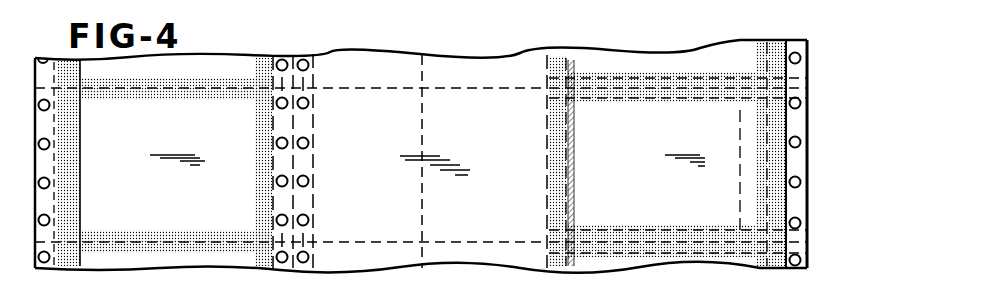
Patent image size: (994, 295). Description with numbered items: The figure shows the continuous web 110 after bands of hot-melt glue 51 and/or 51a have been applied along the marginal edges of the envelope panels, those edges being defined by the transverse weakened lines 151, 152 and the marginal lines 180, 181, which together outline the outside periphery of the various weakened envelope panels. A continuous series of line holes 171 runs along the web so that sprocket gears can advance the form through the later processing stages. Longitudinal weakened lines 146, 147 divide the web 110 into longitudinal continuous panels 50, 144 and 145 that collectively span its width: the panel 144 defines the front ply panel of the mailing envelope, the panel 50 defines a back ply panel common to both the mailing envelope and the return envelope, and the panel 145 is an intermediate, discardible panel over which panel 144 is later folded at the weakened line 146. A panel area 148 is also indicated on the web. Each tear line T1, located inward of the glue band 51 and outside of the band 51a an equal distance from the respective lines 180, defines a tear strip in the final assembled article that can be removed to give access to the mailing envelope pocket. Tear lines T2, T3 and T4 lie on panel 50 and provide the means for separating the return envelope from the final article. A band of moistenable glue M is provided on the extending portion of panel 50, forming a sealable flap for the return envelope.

The web 110 is at (451, 52).
The front ply panel 144 is at (200, 76).
The intermediate discardible panel 145 is at (397, 70).
The longitudinal weakened line 146 is at (290, 158).
The longitudinal weakened line 147 is at (547, 133).
The panel area 148 is at (422, 137).
The transverse weakened line 151 is at (347, 87).
The transverse weakened line 152 is at (350, 241).
The back ply panel 50 is at (690, 62).
The glue 51 is at (73, 99).
The glue band 51a is at (760, 203).
The line holes 171 is at (51, 107).
The marginal line 180 is at (58, 200).
The marginal line 181 is at (310, 161).
The moistenable glue M is at (575, 128).
The tear line T1 is at (82, 158).
The tear line T2 is at (690, 100).
The tear line T3 is at (655, 230).
The tear line T4 is at (575, 161).